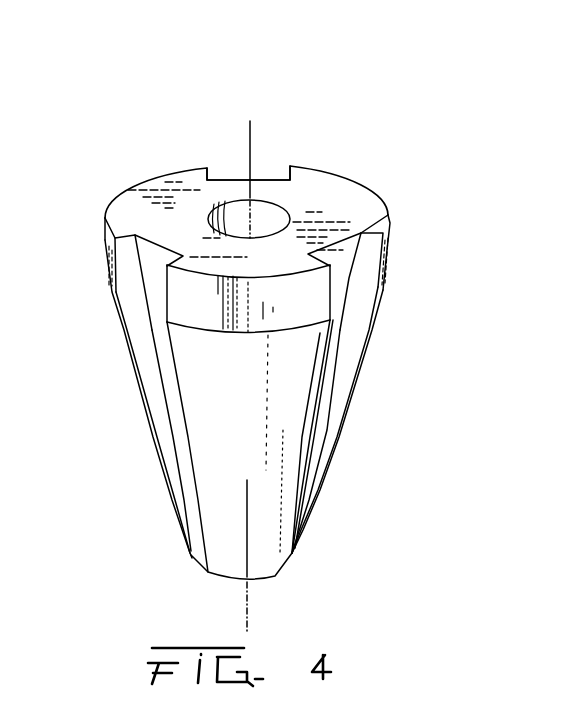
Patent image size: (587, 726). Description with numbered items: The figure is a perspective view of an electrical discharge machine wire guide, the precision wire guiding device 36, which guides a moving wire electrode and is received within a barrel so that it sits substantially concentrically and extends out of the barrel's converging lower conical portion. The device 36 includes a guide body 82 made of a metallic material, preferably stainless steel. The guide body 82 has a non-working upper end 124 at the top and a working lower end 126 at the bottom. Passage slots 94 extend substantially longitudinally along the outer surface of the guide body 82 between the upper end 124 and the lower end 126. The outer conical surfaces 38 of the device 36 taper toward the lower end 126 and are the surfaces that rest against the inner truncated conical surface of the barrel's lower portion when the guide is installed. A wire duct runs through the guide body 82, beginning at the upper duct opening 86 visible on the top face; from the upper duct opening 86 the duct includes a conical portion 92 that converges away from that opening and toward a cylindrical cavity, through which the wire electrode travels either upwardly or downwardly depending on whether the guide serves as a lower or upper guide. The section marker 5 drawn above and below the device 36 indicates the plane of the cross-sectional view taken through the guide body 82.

The collet assembly 124 is at (342, 158).
The top surface of flange 86 is at (291, 203).
The central bore 92 is at (265, 215).
The flange 82 is at (392, 249).
The slots 94 is at (218, 168).
The tapered legs 38 is at (343, 402).
The tapered body 36 is at (131, 409).
The leg tip 126 is at (180, 559).
The section line of FIG. 5 is at (255, 128).